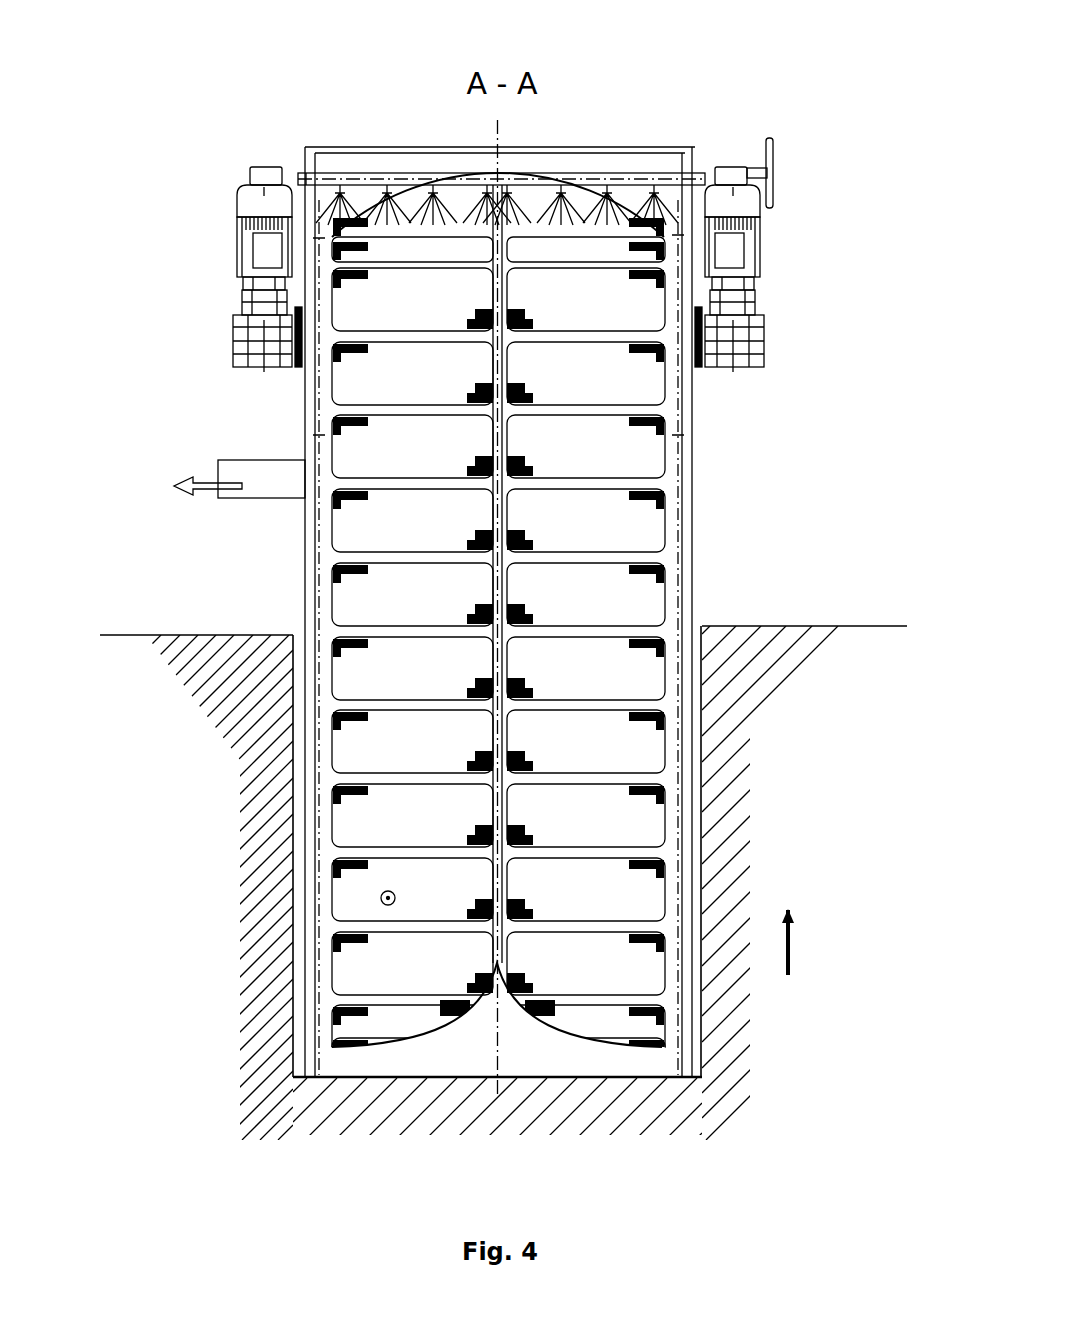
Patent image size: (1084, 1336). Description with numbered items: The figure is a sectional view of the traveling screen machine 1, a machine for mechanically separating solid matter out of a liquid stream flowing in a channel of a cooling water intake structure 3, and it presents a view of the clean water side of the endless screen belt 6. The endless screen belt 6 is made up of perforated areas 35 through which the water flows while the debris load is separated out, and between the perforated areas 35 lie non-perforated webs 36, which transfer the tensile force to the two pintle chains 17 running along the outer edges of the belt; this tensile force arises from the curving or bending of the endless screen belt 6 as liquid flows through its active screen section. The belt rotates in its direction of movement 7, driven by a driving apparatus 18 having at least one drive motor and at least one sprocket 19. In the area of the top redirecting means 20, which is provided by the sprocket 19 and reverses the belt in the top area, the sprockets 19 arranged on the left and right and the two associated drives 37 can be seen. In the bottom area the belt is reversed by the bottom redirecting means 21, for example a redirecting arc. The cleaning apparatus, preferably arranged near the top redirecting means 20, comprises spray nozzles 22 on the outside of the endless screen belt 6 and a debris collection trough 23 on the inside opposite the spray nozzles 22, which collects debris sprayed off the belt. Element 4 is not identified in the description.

The traveling screen machine 1 is at (699, 66).
The structure 3 is at (143, 640).
The sensor 4 is at (381, 898).
The endless screen belt 6 is at (625, 528).
The direction of movement 7 is at (792, 950).
The pintle chains 17 is at (688, 455).
The driving apparatus 18 is at (743, 111).
The sprocket 19 is at (307, 380).
The top redirecting means 20 is at (340, 136).
The bottom redirecting means 21 is at (233, 1011).
The spray nozzles 22 is at (613, 185).
The debris collection trough 23 is at (252, 493).
The perforated areas 35 is at (640, 605).
The non-perforated webs 36 is at (380, 780).
The drives 37 is at (236, 336).